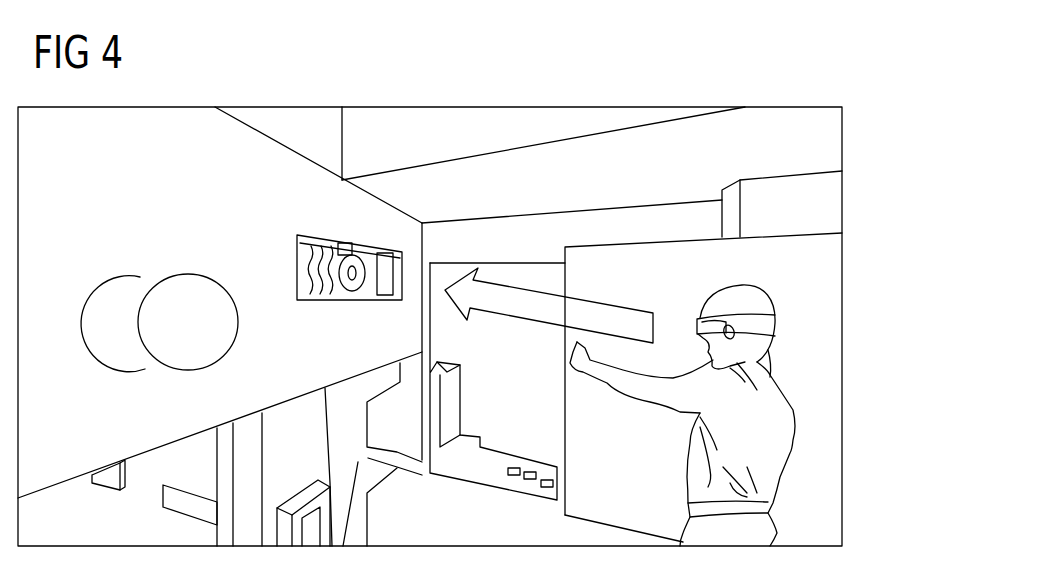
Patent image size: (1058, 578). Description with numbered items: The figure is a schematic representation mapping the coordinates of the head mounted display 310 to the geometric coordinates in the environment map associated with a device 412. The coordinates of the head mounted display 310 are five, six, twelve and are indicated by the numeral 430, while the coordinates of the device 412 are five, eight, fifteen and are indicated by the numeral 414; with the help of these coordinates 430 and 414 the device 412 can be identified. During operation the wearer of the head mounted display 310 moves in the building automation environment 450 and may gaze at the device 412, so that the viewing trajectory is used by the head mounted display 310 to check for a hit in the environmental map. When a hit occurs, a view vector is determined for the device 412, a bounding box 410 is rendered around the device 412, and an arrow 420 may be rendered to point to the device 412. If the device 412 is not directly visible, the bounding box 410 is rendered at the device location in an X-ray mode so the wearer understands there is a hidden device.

The building automation environment 450 is at (79, 157).
The coordinates of the device 414 is at (297, 222).
The bounding box 410 is at (297, 300).
The device 412 is at (366, 292).
The arrow 420 is at (557, 327).
The coordinates of the head mounted display 430 is at (792, 263).
The head mounted display 310 is at (697, 322).